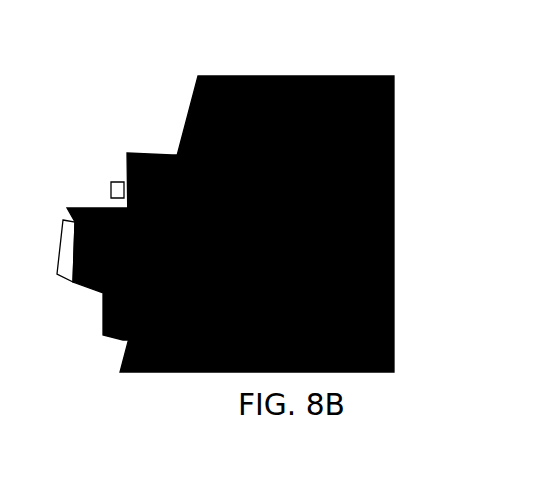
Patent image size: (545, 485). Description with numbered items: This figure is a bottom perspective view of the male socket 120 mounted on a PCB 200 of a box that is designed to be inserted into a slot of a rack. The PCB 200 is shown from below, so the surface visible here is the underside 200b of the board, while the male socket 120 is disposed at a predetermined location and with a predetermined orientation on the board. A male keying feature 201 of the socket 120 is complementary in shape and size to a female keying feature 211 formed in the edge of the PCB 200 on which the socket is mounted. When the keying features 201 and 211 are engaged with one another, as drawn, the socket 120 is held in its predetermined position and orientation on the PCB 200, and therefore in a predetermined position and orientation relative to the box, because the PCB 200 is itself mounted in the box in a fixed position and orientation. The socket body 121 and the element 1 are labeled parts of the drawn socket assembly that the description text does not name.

The PCB 200 is at (343, 76).
The panel surface 200b is at (362, 115).
The male socket 120 is at (137, 154).
The connector body 121 is at (73, 213).
The pin 1 is at (114, 199).
The male keying feature 201 is at (150, 297).
The female keying feature 211 is at (167, 297).